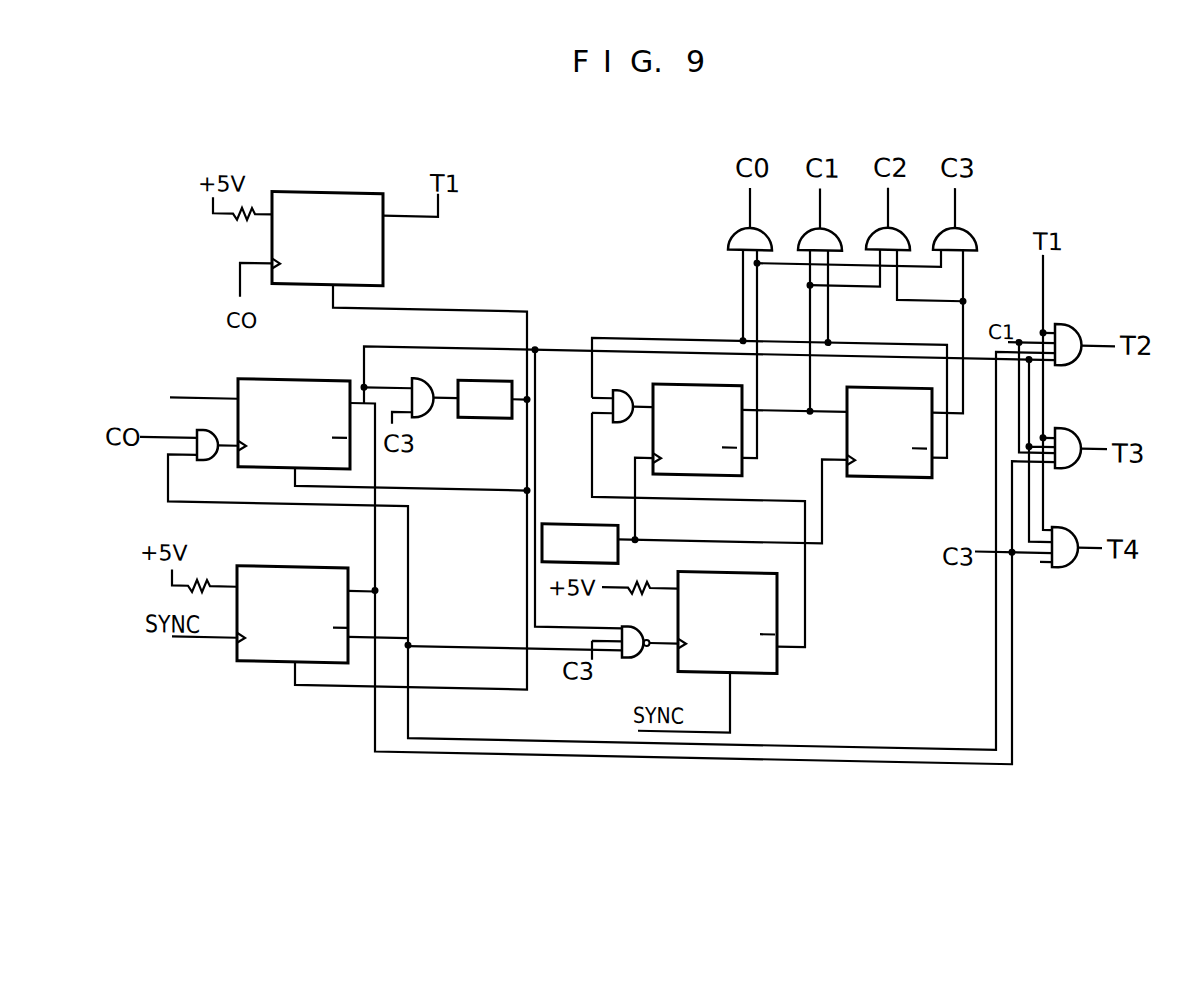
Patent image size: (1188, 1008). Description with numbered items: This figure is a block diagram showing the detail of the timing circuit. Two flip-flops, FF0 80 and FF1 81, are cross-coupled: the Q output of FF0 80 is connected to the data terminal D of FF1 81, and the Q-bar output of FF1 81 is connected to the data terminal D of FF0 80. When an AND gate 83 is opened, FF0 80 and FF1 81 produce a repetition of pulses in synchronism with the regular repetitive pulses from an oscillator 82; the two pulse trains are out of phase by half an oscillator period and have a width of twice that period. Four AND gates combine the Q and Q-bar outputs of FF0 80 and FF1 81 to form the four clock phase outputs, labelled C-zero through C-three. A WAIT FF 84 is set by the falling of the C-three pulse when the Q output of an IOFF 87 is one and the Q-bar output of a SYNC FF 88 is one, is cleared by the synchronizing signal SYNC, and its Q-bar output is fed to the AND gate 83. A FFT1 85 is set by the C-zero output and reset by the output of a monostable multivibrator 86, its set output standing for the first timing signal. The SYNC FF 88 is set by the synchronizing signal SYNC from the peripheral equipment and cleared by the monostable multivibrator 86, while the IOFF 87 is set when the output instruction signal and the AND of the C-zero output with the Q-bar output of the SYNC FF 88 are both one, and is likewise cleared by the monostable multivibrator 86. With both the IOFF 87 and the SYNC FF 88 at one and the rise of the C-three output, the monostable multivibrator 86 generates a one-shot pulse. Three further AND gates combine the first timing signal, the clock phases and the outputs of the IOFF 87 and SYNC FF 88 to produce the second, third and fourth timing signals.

The FF0 80 is at (742, 472).
The FF1 81 is at (932, 470).
The oscillator 82 is at (561, 517).
The AND gate 83 is at (619, 390).
The WAIT FF 84 is at (777, 660).
The FFT1 85 is at (383, 266).
The monostable multivibrator 86 is at (470, 383).
The IOFF 87 is at (318, 386).
The SYNC FF 88 is at (297, 573).